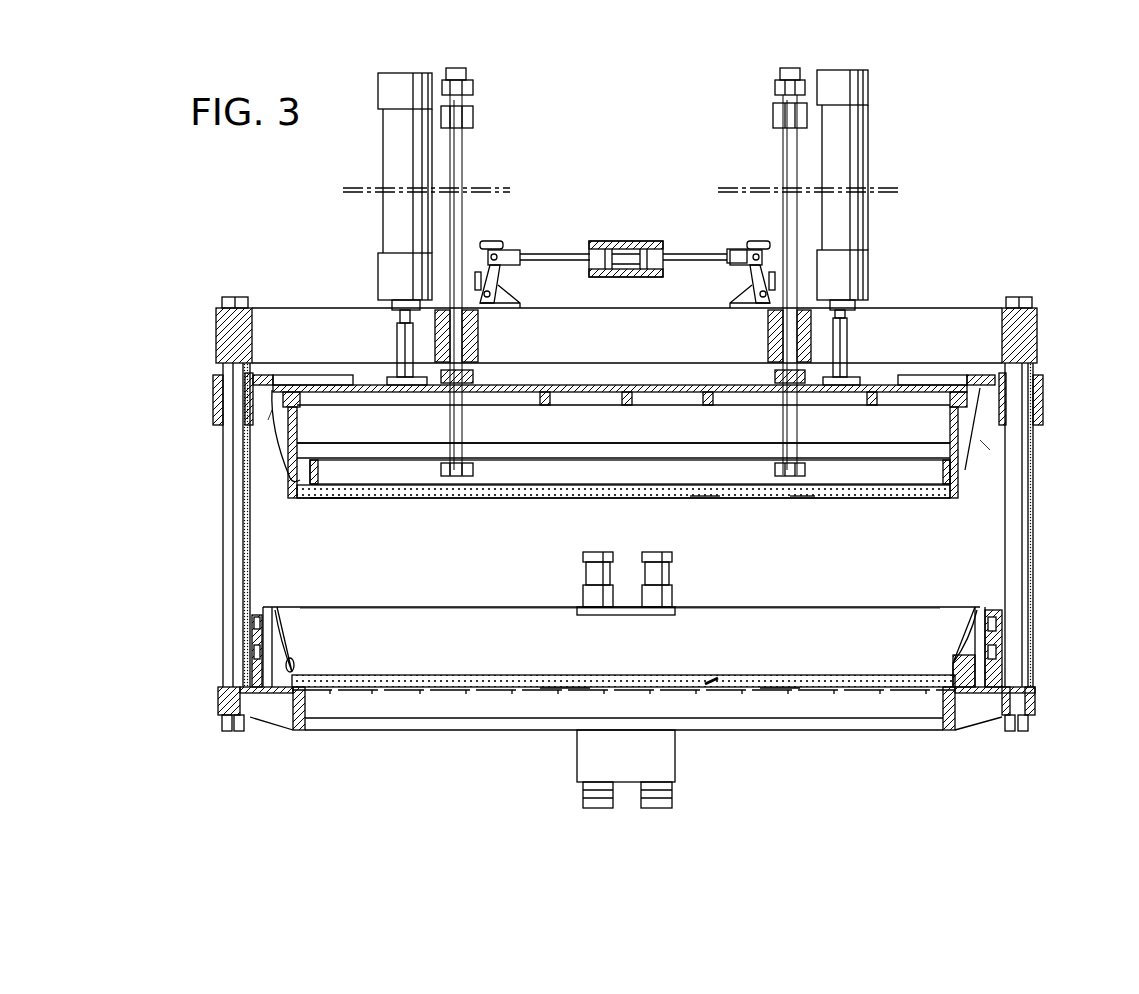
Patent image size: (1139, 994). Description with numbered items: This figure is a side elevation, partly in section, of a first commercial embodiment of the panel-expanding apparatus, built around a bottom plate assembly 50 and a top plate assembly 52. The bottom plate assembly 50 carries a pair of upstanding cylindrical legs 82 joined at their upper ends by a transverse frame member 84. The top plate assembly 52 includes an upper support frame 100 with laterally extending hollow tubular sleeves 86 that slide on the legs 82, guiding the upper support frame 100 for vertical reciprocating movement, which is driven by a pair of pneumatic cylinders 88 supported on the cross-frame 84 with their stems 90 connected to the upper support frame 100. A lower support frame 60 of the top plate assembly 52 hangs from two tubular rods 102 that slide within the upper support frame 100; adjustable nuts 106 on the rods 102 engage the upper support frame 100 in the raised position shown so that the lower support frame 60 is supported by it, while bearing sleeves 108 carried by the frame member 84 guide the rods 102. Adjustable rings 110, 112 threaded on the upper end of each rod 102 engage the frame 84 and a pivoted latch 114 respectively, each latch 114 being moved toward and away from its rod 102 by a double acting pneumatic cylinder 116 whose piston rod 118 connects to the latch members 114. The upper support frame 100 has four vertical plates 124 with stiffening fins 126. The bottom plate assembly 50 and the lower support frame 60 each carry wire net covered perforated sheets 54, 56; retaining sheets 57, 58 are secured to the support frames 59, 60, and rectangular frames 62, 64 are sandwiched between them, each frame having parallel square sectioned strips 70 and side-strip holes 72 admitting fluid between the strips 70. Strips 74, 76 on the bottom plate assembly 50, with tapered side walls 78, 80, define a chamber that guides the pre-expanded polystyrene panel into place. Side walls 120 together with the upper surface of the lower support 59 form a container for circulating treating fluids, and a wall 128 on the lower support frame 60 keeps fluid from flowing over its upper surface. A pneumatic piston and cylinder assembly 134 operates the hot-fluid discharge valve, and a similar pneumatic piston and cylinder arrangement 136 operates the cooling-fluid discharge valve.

The bottom plate assembly 50 is at (395, 605).
The top plate assembly 52 is at (985, 447).
The wire net covered perforated sheet 54 is at (430, 680).
The wire net covered perforated sheet 56 is at (430, 497).
The retaining sheet 57 is at (566, 688).
The retaining sheet 58 is at (518, 492).
The support frame 59 is at (455, 712).
The lower support frame 60 is at (350, 505).
The rectangular frame 62 is at (715, 680).
The rectangular frame 64 is at (553, 498).
The square sectioned strips 70 is at (580, 678).
The holes 72 is at (780, 685).
The strip 74 is at (295, 663).
The strip 76 is at (360, 680).
The tapered side wall 78 is at (848, 610).
The tapered side wall 80 is at (290, 640).
The cylindrical legs 82 is at (230, 540).
The transverse frame member 84 is at (272, 306).
The hollow tubular sleeves 86 is at (212, 398).
The pneumatic cylinders 88 is at (405, 150).
The stems 90 is at (400, 340).
The upper support frame 100 is at (270, 447).
The tubular rods 102 is at (463, 212).
The adjustable nuts 106 is at (478, 375).
The bearing sleeves 108 is at (480, 332).
The adjustable ring 110 is at (475, 115).
The adjustable ring 112 is at (474, 88).
The pivoted latch 114 is at (490, 243).
The double acting pneumatic cylinder 116 is at (630, 240).
The piston rod 118 is at (560, 262).
The side walls 120 is at (257, 650).
The vertical plates 124 is at (320, 440).
The stiffening fins 126 is at (298, 423).
The wall 128 is at (293, 478).
The pneumatic piston and cylinder assembly 134 is at (662, 573).
The pneumatic piston and cylinder arrangement 136 is at (595, 578).